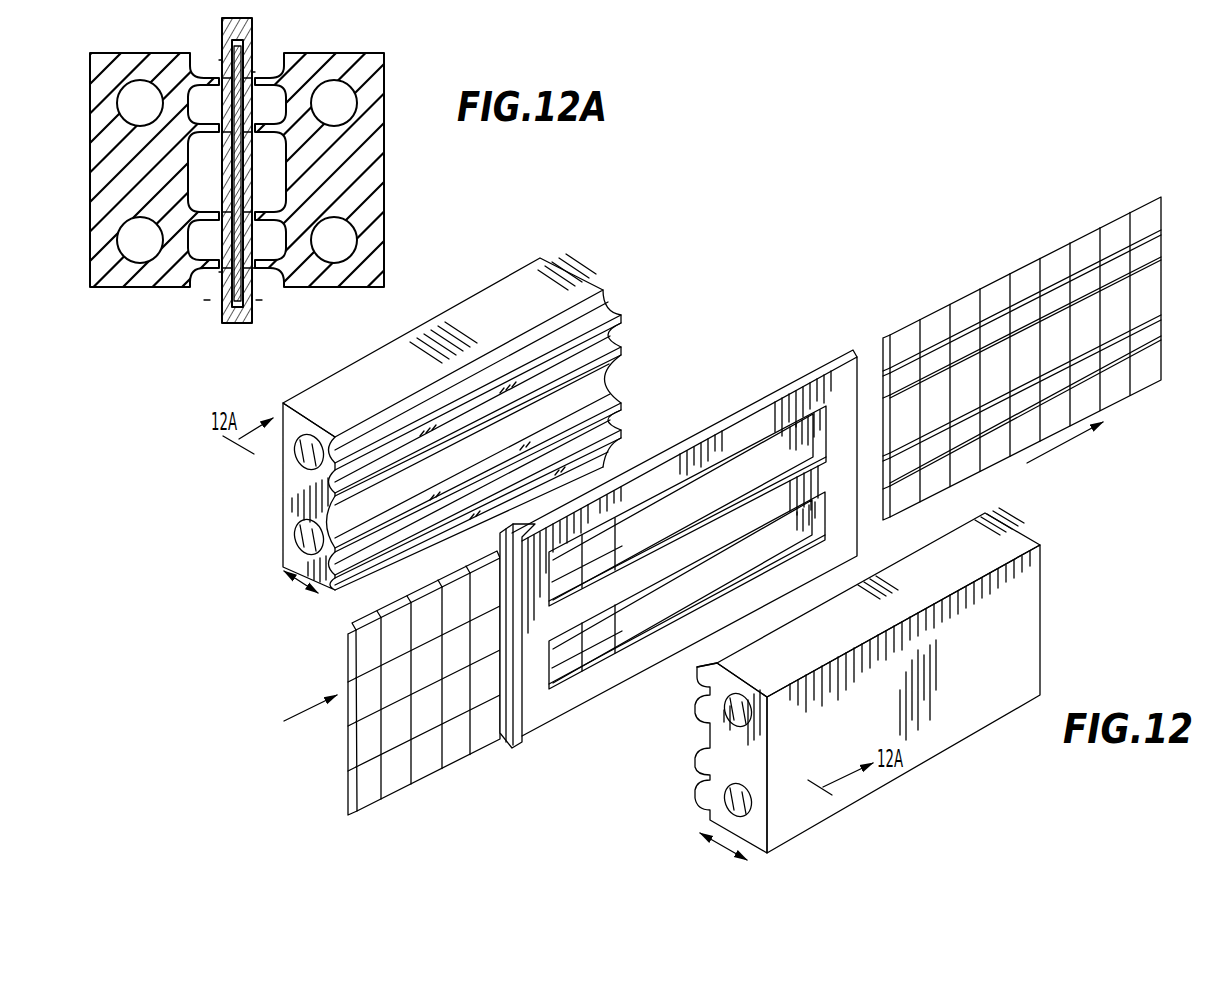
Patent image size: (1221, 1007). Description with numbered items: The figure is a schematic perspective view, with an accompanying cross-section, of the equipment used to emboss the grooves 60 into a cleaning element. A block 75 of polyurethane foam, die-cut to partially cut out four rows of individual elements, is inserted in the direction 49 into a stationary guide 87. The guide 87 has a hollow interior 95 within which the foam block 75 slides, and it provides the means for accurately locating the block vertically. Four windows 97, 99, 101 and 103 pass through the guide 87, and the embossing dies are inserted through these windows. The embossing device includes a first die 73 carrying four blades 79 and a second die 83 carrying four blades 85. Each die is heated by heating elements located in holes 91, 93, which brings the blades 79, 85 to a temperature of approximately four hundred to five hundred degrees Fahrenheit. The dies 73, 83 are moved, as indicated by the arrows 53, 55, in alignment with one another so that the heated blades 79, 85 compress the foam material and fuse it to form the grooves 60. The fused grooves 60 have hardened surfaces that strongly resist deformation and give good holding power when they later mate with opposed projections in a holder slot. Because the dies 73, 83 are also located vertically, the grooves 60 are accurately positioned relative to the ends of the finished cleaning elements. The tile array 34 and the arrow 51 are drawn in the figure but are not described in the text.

In FIG. 12A, the transducer tile array 34 is at (236, 324).
In FIG. 12, the transducer tile array 34 is at (1158, 197).
In FIG. 12, the direction 49 is at (310, 722).
In FIG. 12, the insertion direction arrow 51 is at (1079, 434).
In FIG. 12, the arrow 53 is at (725, 848).
In FIG. 12, the arrow 55 is at (298, 582).
In FIG. 12, the grooves 60 is at (1163, 236).
In FIG. 12A, the first die 73 is at (93, 288).
In FIG. 12, the first die 73 is at (545, 260).
In FIG. 12, the block 75 is at (377, 797).
In FIG. 12A, the blades 79 is at (208, 323).
In FIG. 12, the blades 79 is at (625, 340).
In FIG. 12A, the second die 83 is at (383, 53).
In FIG. 12, the second die 83 is at (1042, 543).
In FIG. 12A, the blades 85 is at (259, 323).
In FIG. 12, the blades 85 is at (698, 670).
In FIG. 12A, the stationary guide 87 is at (253, 22).
In FIG. 12, the stationary guide 87 is at (850, 348).
In FIG. 12A, the holes 91 is at (125, 98).
In FIG. 12, the holes 91 is at (296, 534).
In FIG. 12A, the holes 93 is at (350, 105).
In FIG. 12, the holes 93 is at (742, 700).
In FIG. 12, the hollow interior 95 is at (808, 533).
In FIG. 12A, the window 97 is at (256, 268).
In FIG. 12, the window 97 is at (658, 600).
In FIG. 12A, the window 99 is at (260, 72).
In FIG. 12, the window 99 is at (748, 462).
In FIG. 12A, the window 101 is at (218, 64).
In FIG. 12A, the window 103 is at (213, 270).